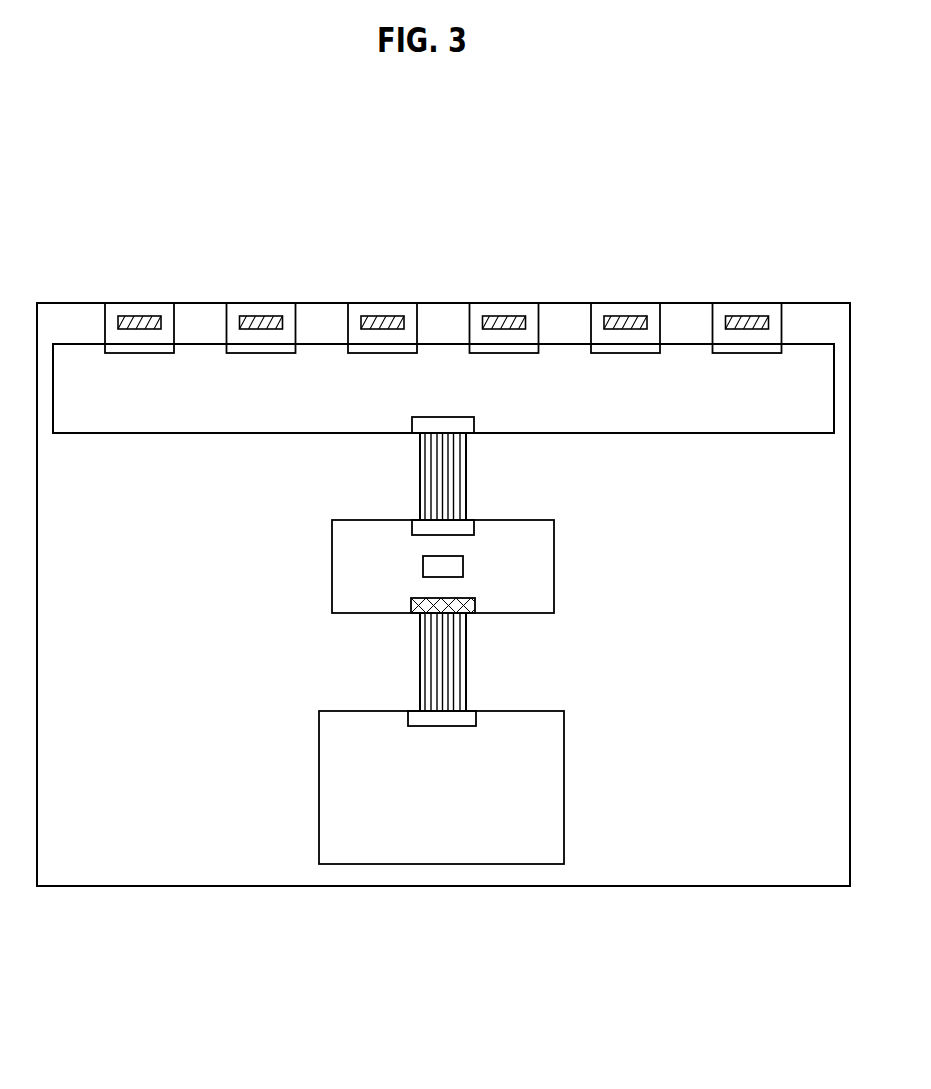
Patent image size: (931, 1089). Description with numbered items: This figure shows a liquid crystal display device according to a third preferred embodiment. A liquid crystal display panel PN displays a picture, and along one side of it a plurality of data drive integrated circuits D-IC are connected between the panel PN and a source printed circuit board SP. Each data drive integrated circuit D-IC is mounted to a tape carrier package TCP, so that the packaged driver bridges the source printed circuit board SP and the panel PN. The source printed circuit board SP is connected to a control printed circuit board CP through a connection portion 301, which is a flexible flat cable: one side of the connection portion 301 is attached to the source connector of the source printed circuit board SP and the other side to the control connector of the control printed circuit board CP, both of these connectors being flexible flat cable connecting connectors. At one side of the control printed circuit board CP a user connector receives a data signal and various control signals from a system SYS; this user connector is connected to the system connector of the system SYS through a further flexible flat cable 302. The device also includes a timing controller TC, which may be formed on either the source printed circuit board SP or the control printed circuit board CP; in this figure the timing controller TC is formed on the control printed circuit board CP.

The liquid crystal display panel PN is at (818, 303).
The source printed circuit board SP is at (803, 434).
The tape carrier package TCP is at (105, 311).
The data drive integrated circuit D-IC is at (139, 316).
The connection portion 301 is at (466, 475).
The control printed circuit board CP is at (554, 593).
The timing controller TC is at (463, 567).
The flexible flat cable 302 is at (466, 660).
The system SYS is at (564, 787).